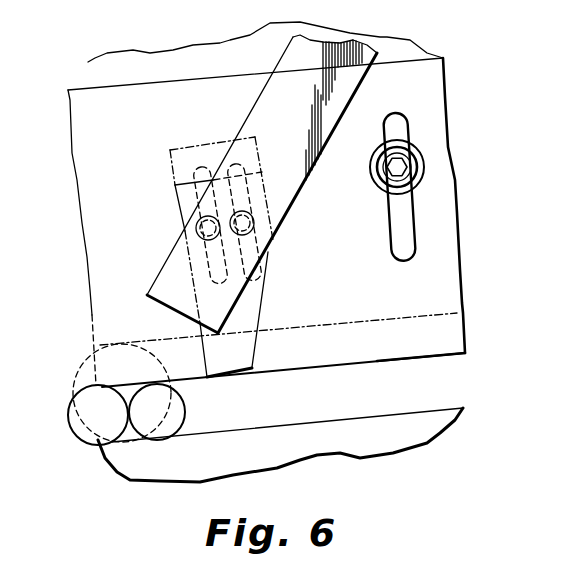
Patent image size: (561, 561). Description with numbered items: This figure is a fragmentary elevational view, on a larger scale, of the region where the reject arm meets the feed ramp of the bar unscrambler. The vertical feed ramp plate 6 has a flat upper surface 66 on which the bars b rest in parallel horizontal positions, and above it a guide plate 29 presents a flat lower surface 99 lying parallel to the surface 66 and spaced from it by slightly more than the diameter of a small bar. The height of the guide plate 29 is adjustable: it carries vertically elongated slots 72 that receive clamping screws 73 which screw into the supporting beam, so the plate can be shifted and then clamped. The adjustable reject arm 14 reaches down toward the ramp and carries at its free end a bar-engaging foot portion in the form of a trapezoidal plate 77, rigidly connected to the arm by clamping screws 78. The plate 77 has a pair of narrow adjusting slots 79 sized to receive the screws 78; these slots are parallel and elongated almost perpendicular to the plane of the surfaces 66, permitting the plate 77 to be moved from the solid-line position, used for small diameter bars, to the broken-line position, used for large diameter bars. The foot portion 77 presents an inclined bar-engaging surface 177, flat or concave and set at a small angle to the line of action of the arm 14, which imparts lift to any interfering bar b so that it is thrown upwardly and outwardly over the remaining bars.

The guide plate 29 is at (89, 103).
The adjustable reject arm 14 is at (256, 105).
The trapezoidal plate 77 is at (213, 140).
The clamping screw 78 is at (213, 215).
The adjusting slot 79 is at (255, 300).
The inclined bar-engaging surface 177 is at (258, 350).
The vertically elongated slot 72 is at (397, 212).
The clamping screw 73 is at (408, 167).
The flat lower surface 99 is at (328, 327).
The flat upper surface 66 is at (343, 420).
The bar b is at (183, 408).
The vertical feed ramp plate 6 is at (147, 463).